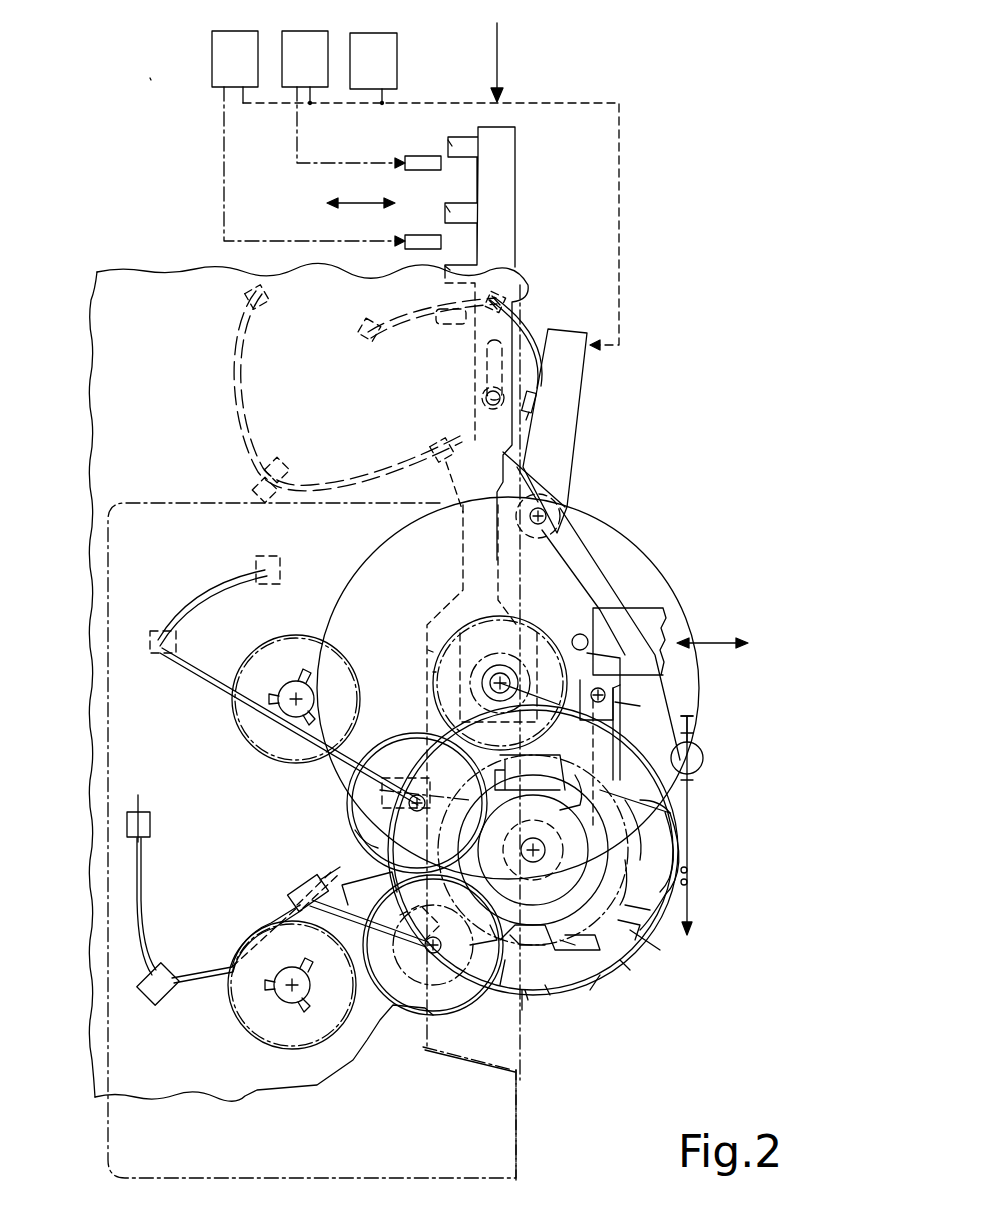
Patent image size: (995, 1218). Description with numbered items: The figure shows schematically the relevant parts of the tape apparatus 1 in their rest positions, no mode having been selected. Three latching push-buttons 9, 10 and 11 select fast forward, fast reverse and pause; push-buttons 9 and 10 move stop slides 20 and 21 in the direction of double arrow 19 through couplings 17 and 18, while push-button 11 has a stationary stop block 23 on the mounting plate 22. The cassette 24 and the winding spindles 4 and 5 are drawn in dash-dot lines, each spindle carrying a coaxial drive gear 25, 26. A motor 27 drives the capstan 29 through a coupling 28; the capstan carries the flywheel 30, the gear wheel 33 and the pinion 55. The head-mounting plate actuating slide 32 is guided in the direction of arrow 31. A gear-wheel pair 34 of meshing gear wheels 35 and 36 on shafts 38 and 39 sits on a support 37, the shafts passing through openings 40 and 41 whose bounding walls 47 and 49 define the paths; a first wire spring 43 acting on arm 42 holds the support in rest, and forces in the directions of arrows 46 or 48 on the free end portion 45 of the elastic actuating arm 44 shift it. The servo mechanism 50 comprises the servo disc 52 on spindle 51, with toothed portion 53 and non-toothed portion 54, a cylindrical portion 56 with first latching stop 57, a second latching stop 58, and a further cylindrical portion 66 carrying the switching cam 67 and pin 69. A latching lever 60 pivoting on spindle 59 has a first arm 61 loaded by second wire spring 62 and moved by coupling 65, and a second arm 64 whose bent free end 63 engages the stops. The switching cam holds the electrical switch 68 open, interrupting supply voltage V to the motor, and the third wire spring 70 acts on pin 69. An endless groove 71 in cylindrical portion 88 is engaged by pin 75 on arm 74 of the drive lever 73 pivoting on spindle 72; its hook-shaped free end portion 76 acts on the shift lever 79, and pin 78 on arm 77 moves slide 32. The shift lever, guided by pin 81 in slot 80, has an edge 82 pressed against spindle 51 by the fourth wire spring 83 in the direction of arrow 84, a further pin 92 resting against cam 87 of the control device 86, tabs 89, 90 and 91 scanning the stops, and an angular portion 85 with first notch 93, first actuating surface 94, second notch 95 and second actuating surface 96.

The apparatus 1 is at (151, 80).
The winding spindle 4 is at (285, 1002).
The winding spindle 5 is at (290, 682).
The push-button 9 is at (222, 36).
The push-button 10 is at (295, 36).
The push-button 11 is at (363, 38).
The coupling 17 is at (258, 241).
The coupling 18 is at (316, 163).
The double arrow 19 is at (360, 203).
The stop slide 20 is at (415, 240).
The stop slide 21 is at (413, 160).
The mounting plate 22 is at (112, 276).
The stop block 23 is at (437, 318).
The magnetic tape cassette 24 is at (518, 1130).
The drive gear 25 is at (278, 1046).
The drive gear 26 is at (248, 660).
The motor 27 is at (703, 765).
The coupling 28 is at (693, 728).
The capstan 29 is at (500, 672).
The flywheel 30 is at (640, 572).
The double-headed arrow 31 is at (707, 646).
The head-mounting plate actuating slide 32 is at (645, 608).
The gear wheel 33 is at (433, 650).
The gear-wheel pair 34 is at (340, 850).
The gear wheel 35 is at (355, 830).
The gear wheel 36 is at (410, 1000).
The support 37 is at (380, 884).
The shaft 38 is at (417, 760).
The shaft 39 is at (428, 952).
The opening 40 is at (395, 775).
The opening 41 is at (372, 906).
The arm 42 is at (296, 888).
The first wire spring 43 is at (200, 992).
The actuating arm 44 is at (425, 830).
The free end portion 45 is at (470, 935).
The arrow 46 is at (545, 948).
The bounding wall 47 is at (405, 925).
The arrow 48 is at (523, 1010).
The bounding wall 49 is at (475, 941).
The servo mechanism 50 is at (656, 960).
The spindle 51 is at (540, 840).
The servo disc 52 is at (500, 990).
The toothed portion 53 is at (675, 818).
The non-toothed portion 54 is at (672, 810).
The pinion 55 is at (432, 672).
The cylindrical portion 56 is at (648, 830).
The first latching stop 57 is at (625, 710).
The second latching stop 58 is at (645, 935).
The spindle 59 is at (548, 514).
The latching lever 60 is at (556, 417).
The first arm 61 is at (576, 380).
The second wire spring 62 is at (525, 345).
The free end 63 is at (635, 812).
The second arm 64 is at (590, 560).
The coupling 65 is at (620, 242).
The further cylindrical portion 66 is at (550, 931).
The switching cam 67 is at (575, 950).
The electrical switch 68 is at (688, 875).
The pin 69 is at (565, 856).
The third wire spring 70 is at (190, 688).
The endless groove 71 is at (566, 785).
The spindle 72 is at (606, 692).
The drive lever 73 is at (612, 702).
The arm 74 is at (688, 884).
The pin 75 is at (645, 879).
The free end portion 76 is at (649, 955).
The arm 77 is at (612, 664).
The pin 78 is at (574, 638).
The shift lever 79 is at (460, 557).
The slot 80 is at (490, 362).
The pin 81 is at (486, 398).
The edge 82 is at (529, 764).
The fourth wire spring 83 is at (258, 440).
The arrow 84 is at (498, 70).
The angular portion 85 is at (606, 994).
The control device 86 is at (459, 103).
The cam 87 is at (541, 756).
The cylindrical portion 88 is at (600, 765).
The tab 89 is at (447, 142).
The tab 90 is at (446, 210).
The tab 91 is at (445, 266).
The further pin 92 is at (531, 688).
The first notch 93 is at (630, 977).
The first actuating surface 94 is at (539, 1006).
The second notch 95 is at (656, 917).
The second actuating surface 96 is at (561, 1001).
The supply voltage V is at (697, 942).